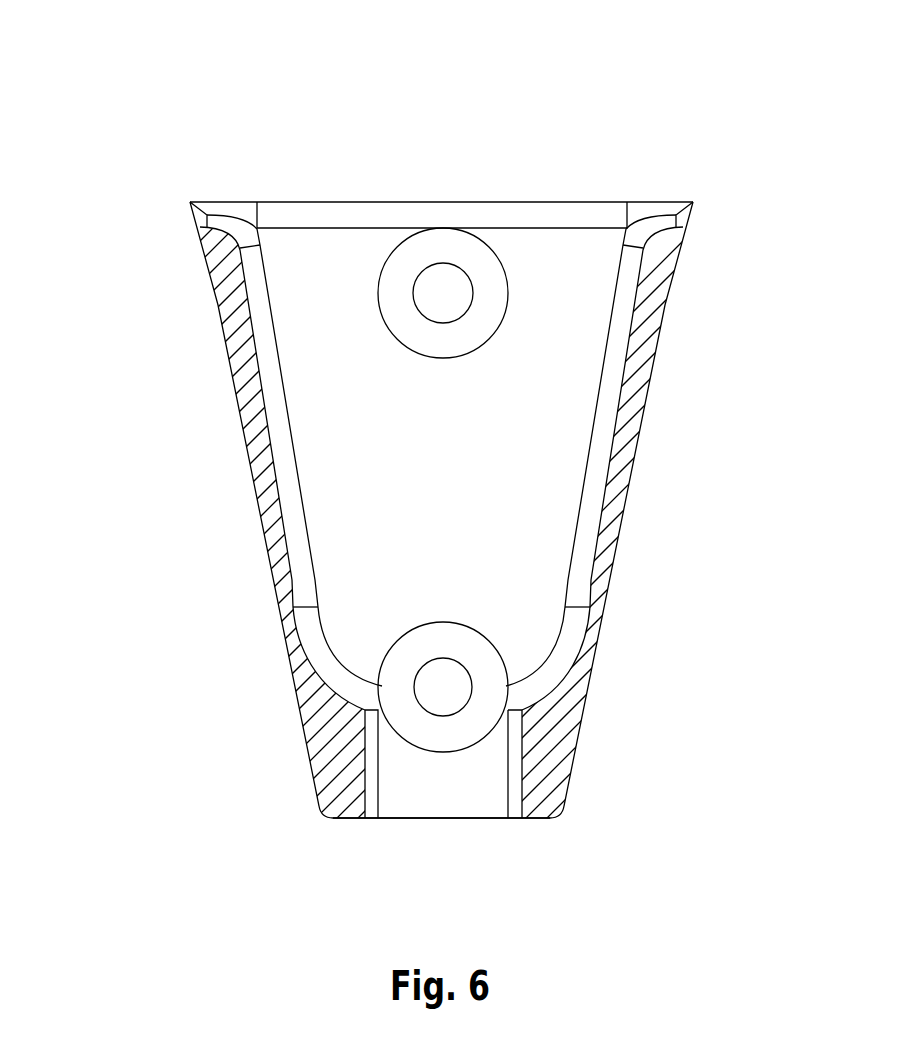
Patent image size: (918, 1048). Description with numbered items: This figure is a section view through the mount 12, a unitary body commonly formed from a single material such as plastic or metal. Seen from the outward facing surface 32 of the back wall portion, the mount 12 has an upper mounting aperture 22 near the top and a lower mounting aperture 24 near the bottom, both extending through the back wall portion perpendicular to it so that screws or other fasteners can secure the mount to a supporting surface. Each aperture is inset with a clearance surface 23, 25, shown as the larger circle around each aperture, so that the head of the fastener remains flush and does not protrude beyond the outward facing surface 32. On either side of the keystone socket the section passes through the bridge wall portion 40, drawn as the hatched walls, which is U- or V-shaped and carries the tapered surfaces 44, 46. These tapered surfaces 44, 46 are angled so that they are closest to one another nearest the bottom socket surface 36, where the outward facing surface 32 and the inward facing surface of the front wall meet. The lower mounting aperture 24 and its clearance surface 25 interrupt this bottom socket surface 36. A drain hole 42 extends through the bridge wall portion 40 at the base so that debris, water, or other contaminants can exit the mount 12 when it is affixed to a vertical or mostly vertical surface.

The mount 12 is at (615, 136).
The upper mounting aperture 22 is at (442, 263).
The clearance surface 23 is at (507, 282).
The lower mounting aperture 24 is at (386, 655).
The clearance surface 25 is at (502, 722).
The outward facing surface 32 is at (430, 496).
The bottom socket surface 36 is at (537, 697).
The bridge wall portion 40 is at (220, 380).
The drain hole 42 is at (411, 788).
The tapered surface 44 is at (270, 460).
The tapered surface 46 is at (633, 383).